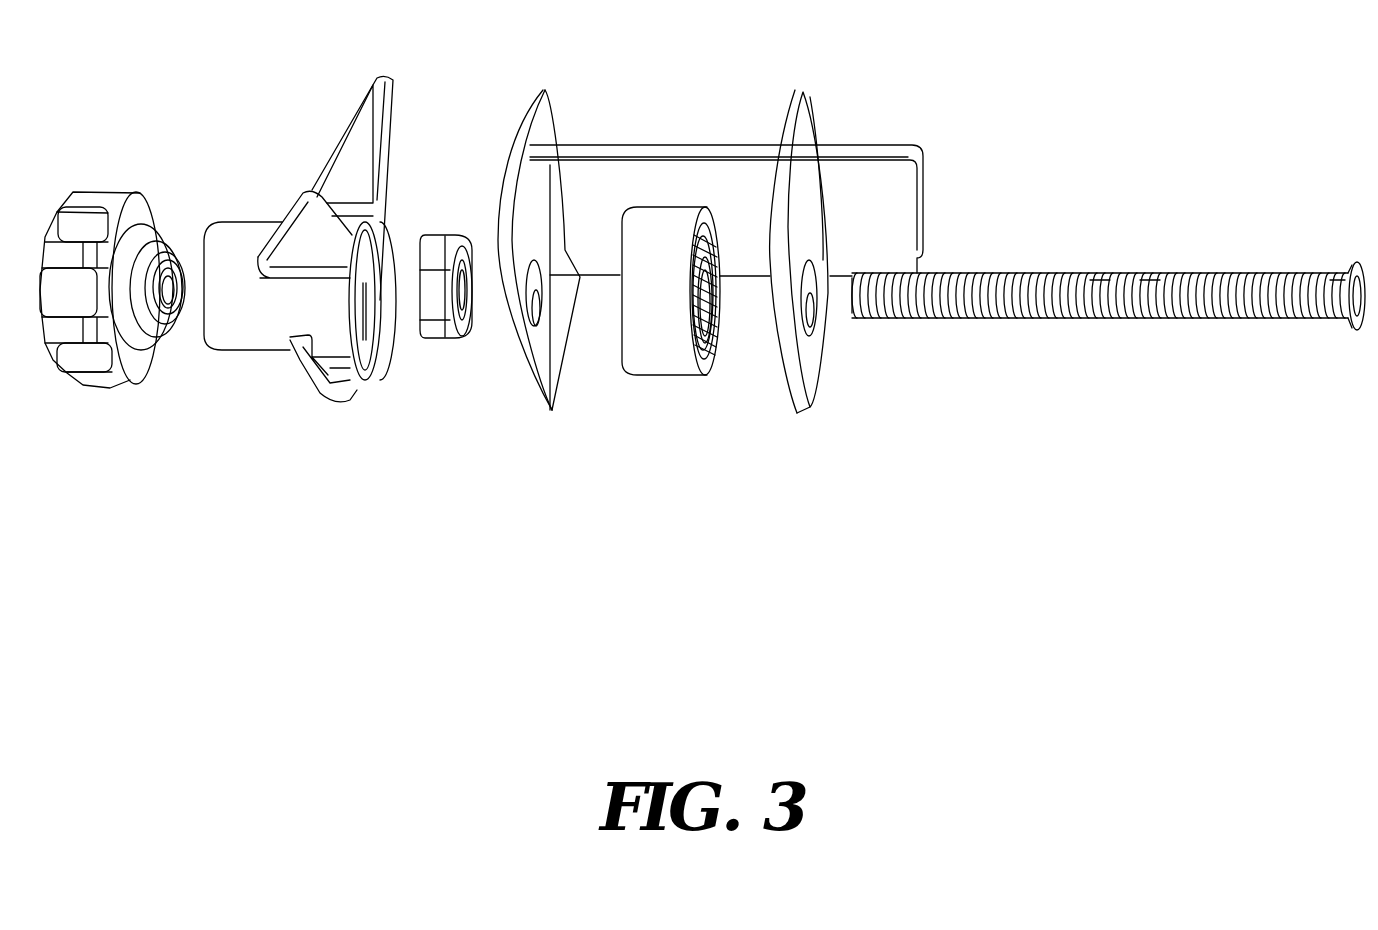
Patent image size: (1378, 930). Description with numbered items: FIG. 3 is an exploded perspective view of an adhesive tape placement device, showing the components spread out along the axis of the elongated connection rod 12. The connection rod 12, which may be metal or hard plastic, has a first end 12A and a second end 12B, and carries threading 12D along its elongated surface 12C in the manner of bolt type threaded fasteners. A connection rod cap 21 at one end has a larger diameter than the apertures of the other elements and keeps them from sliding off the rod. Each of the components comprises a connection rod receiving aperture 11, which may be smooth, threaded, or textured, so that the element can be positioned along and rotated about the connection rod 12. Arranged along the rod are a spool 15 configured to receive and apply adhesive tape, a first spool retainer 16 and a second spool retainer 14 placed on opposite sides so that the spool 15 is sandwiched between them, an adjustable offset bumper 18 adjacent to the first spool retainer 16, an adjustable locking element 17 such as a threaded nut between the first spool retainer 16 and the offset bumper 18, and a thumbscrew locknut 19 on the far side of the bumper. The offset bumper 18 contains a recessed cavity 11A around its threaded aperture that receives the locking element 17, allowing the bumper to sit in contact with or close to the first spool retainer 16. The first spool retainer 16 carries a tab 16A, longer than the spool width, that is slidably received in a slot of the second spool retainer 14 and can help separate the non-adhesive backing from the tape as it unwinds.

The connection rod receiving aperture 11 is at (168, 336).
The recessed cavity 11A is at (370, 300).
The elongated connection rod 12 is at (1043, 273).
The first end 12A is at (857, 318).
The second end 12B is at (1340, 318).
The elongated surface 12C is at (1146, 280).
The threading 12D is at (1095, 319).
The second spool retainer 14 is at (793, 127).
The spool 15 is at (652, 337).
The first spool retainer 16 is at (542, 133).
The tab 16A is at (600, 193).
The adjustable locking element 17 is at (432, 277).
The adjustable offset bumper 18 is at (237, 297).
The thumbscrew locknut 19 is at (107, 287).
The connection rod cap 21 is at (1348, 272).